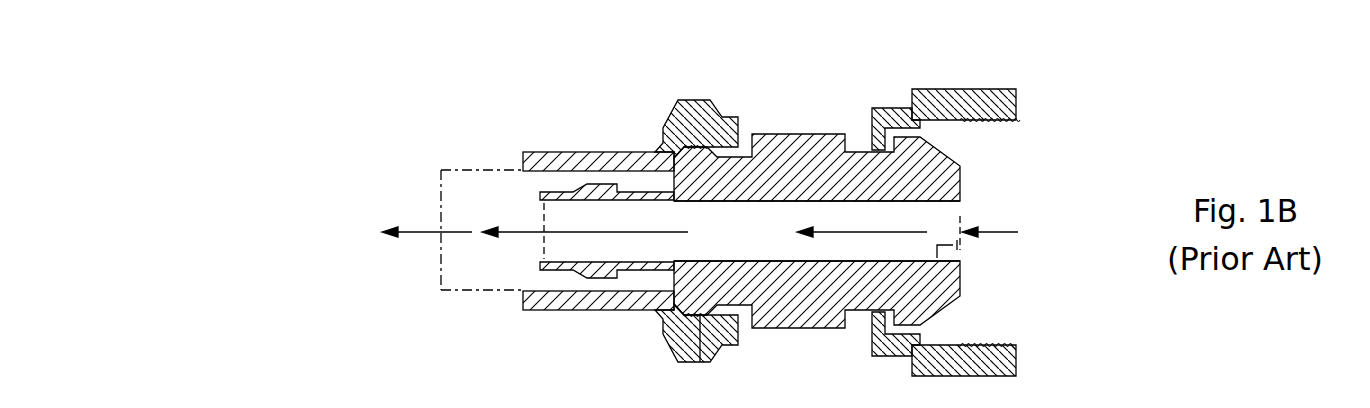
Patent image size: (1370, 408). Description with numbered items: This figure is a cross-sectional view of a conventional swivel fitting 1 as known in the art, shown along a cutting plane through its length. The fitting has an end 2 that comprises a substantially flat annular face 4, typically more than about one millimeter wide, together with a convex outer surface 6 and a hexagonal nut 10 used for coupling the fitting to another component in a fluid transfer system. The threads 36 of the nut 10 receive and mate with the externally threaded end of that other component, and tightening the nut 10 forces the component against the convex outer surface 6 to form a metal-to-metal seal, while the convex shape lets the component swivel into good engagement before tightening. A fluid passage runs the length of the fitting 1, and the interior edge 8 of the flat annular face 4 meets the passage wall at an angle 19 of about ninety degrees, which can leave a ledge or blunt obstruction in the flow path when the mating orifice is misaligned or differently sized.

The swivel fitting 1 is at (782, 220).
The end 2 is at (928, 217).
The flat annular face 4 is at (960, 168).
The convex outer surface 6 is at (940, 148).
The interior edge 8 is at (960, 207).
The hexagonal nut 10 is at (1004, 100).
The angle 19 is at (952, 254).
The threads 36 is at (702, 362).